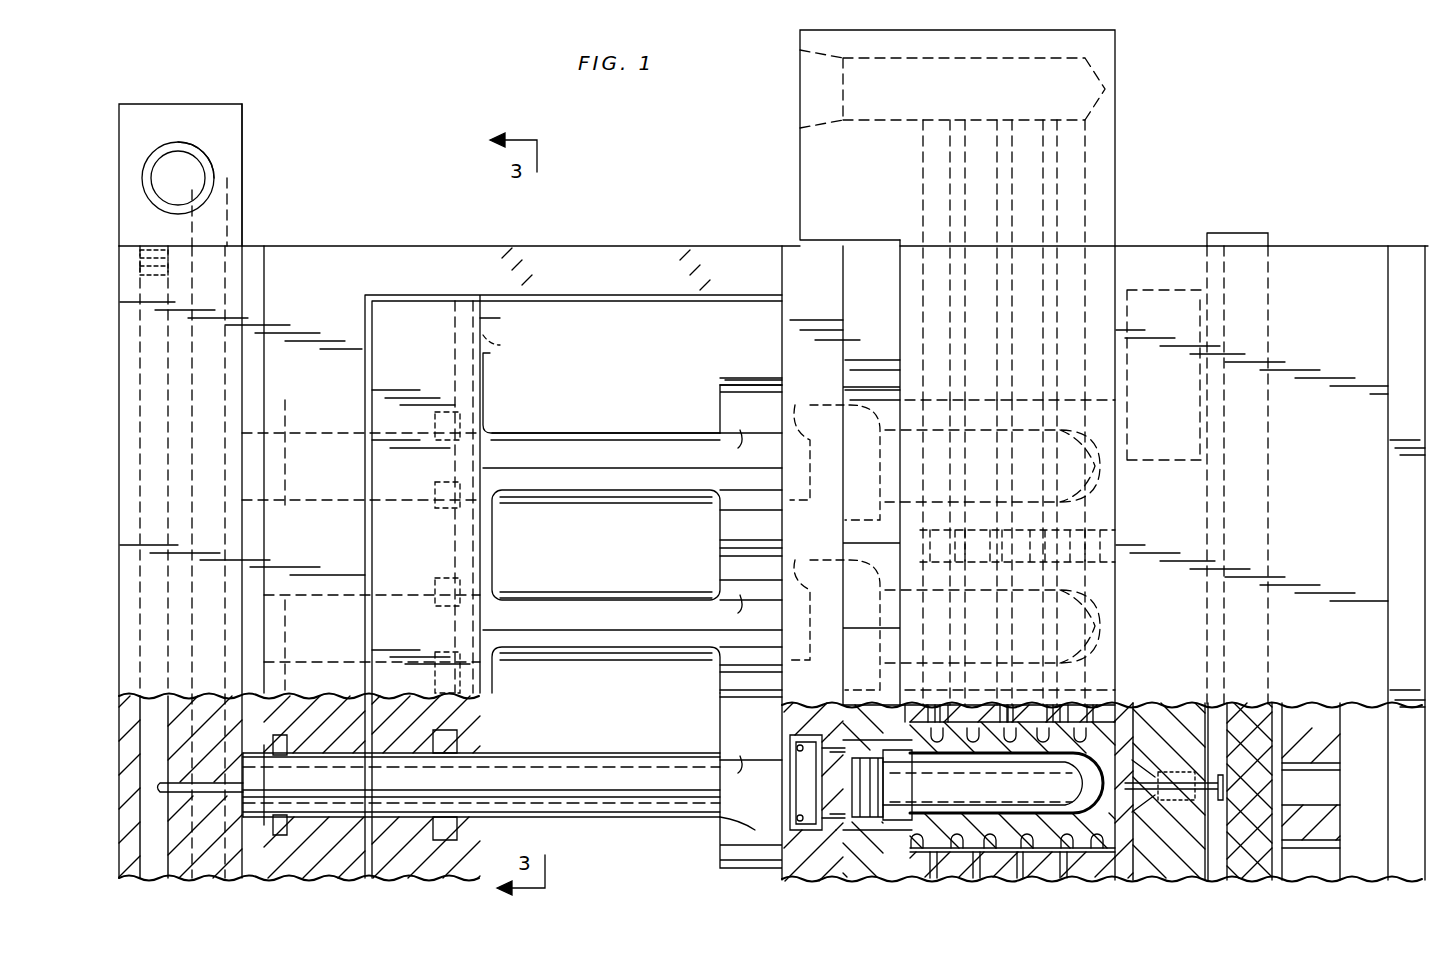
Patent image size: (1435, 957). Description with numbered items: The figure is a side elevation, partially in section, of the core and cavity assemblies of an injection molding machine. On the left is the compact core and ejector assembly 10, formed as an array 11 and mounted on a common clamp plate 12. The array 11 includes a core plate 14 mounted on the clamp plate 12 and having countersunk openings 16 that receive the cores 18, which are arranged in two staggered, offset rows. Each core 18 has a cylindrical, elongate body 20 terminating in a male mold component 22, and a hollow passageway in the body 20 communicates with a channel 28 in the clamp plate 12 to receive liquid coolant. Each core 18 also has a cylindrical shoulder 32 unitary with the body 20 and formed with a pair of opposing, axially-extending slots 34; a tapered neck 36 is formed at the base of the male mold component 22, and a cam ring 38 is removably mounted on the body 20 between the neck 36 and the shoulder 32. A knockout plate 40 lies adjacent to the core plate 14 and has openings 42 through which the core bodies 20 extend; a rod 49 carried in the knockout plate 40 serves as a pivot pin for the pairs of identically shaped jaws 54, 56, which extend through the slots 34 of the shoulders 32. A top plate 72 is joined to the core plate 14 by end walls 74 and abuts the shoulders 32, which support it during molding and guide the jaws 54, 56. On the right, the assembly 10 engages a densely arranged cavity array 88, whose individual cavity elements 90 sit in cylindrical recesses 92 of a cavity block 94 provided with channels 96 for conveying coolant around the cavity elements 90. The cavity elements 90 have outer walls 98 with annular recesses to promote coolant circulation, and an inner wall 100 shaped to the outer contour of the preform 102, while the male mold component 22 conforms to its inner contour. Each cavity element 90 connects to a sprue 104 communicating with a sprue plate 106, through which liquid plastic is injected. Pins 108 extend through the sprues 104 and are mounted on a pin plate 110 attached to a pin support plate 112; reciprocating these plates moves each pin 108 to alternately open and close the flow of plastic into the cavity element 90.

The compact core and ejector assembly 10 is at (662, 222).
The array 11 is at (573, 246).
The clamp plate 12 is at (240, 148).
The core plate 14 is at (333, 262).
The countersunk openings 16 is at (313, 755).
The core 18 is at (562, 505).
The body 20 is at (635, 432).
The male mold component 22 is at (943, 788).
The channel 28 is at (160, 865).
The cylindrical shoulder 32 is at (748, 385).
The axially-extending slots 34 is at (741, 440).
The tapered neck 36 is at (775, 868).
The cam ring 38 is at (738, 820).
The knockout plate 40 is at (482, 318).
The openings 42 is at (393, 755).
The rod 49 is at (500, 345).
The jaw 54 is at (548, 445).
The jaw 56 is at (830, 845).
The top plate 72 is at (790, 246).
The end walls 74 is at (420, 265).
The cavity array 88 is at (1118, 190).
The cavity element 90 is at (1010, 840).
The cylindrical recesses 92 is at (1000, 703).
The cavity block 94 is at (1105, 275).
The channels 96 is at (924, 270).
The outer walls 98 is at (965, 703).
The inner wall 100 is at (1040, 703).
The preform 102 is at (920, 703).
The sprue 104 is at (1150, 703).
The sprue plate 106 is at (1190, 703).
The pin 108 is at (1260, 703).
The pin plate 110 is at (1285, 705).
The pin support plate 112 is at (1290, 750).